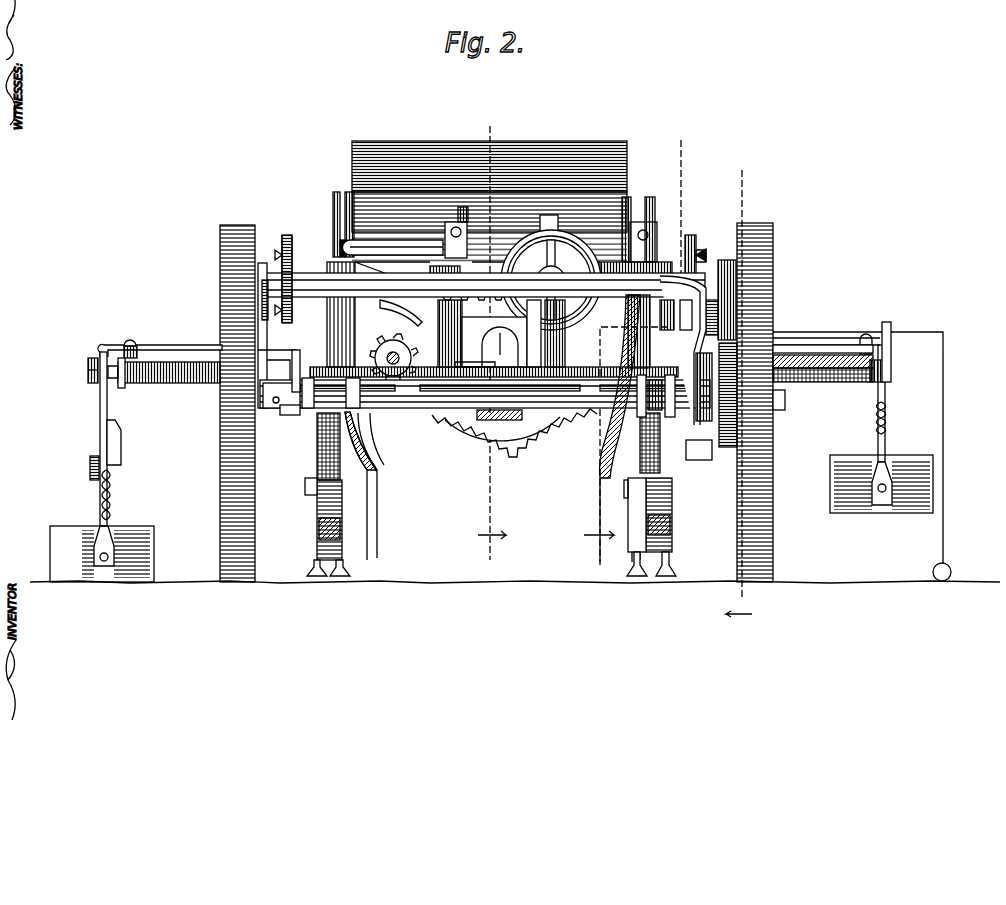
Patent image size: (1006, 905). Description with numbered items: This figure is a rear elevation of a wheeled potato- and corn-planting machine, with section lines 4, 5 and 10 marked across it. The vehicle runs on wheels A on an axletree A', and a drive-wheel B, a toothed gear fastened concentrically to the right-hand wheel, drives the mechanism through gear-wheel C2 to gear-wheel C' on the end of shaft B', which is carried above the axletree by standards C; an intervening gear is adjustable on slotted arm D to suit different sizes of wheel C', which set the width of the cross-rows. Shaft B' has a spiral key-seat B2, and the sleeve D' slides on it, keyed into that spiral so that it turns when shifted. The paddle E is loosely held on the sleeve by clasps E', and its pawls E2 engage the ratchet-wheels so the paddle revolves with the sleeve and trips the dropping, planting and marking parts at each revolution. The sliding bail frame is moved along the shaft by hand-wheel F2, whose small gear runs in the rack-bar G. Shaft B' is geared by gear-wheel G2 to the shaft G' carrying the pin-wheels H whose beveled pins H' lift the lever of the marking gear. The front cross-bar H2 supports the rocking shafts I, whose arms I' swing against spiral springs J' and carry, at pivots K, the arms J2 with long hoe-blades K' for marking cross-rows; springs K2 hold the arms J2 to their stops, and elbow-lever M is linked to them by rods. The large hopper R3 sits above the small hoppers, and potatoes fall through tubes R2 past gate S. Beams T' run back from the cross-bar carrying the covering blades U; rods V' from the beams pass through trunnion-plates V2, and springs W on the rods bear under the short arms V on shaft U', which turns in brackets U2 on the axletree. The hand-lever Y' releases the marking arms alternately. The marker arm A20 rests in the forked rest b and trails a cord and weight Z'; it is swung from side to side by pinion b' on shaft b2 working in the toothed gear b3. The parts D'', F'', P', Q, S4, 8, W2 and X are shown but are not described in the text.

The wheels A is at (488, 402).
The axletree A' is at (326, 314).
The marker A20 is at (804, 342).
The drive-wheel B is at (705, 464).
The shaft B' is at (485, 273).
The spiral key-seat B2 is at (401, 313).
The forked rest b is at (858, 434).
The pinion b' is at (394, 352).
The shaft b2 is at (398, 380).
The circular toothed gear b3 is at (532, 436).
The standards C is at (246, 335).
The gear-wheel C' is at (729, 334).
The gear-wheel C2 is at (730, 330).
The slotted arm D is at (721, 289).
The sleeve D' is at (623, 229).
The clutch D'' is at (652, 331).
The paddle E is at (551, 229).
The clasps E' is at (474, 223).
The pawls E2 is at (690, 240).
The hand-wheel F2 is at (560, 240).
The clutch sleeve F'' is at (551, 281).
The rack-bar G is at (540, 280).
The horizontal shaft G' is at (232, 299).
The gear-wheel G2 is at (284, 234).
The wheels H is at (704, 244).
The beveled headed pins H' is at (476, 249).
The front cross-bar H2 is at (493, 399).
The horizontal shafts I is at (146, 361).
The arm I' is at (489, 455).
The spiral springs J' is at (490, 347).
The downwardly-extending arms J2 is at (114, 500).
The pivot K is at (496, 412).
The hoe-blades K' is at (491, 508).
The springs K2 is at (90, 490).
The elbow-lever M is at (126, 340).
The shaft P' is at (393, 252).
The standard Q is at (337, 210).
The tubes R2 is at (360, 470).
The large hopper R3 is at (524, 160).
The gate S is at (546, 334).
The key S4 is at (505, 425).
The cam block 8 is at (482, 333).
The beams T' is at (488, 513).
The blades U is at (479, 558).
The horizontal shaft U' is at (494, 415).
The brackets U2 is at (262, 384).
The short arms V is at (488, 412).
The rods V' is at (443, 422).
The trunnion-plates V2 is at (615, 408).
The springs W is at (366, 448).
The collar W2 is at (760, 315).
The gear X is at (722, 415).
The hand-lever Y' is at (485, 428).
The weight Z' is at (953, 564).
The section line 4 is at (492, 345).
The section line 5 is at (634, 352).
The section line 10 is at (741, 386).